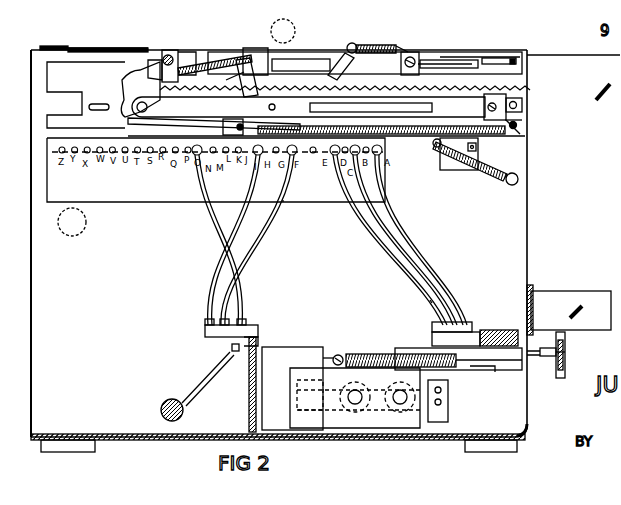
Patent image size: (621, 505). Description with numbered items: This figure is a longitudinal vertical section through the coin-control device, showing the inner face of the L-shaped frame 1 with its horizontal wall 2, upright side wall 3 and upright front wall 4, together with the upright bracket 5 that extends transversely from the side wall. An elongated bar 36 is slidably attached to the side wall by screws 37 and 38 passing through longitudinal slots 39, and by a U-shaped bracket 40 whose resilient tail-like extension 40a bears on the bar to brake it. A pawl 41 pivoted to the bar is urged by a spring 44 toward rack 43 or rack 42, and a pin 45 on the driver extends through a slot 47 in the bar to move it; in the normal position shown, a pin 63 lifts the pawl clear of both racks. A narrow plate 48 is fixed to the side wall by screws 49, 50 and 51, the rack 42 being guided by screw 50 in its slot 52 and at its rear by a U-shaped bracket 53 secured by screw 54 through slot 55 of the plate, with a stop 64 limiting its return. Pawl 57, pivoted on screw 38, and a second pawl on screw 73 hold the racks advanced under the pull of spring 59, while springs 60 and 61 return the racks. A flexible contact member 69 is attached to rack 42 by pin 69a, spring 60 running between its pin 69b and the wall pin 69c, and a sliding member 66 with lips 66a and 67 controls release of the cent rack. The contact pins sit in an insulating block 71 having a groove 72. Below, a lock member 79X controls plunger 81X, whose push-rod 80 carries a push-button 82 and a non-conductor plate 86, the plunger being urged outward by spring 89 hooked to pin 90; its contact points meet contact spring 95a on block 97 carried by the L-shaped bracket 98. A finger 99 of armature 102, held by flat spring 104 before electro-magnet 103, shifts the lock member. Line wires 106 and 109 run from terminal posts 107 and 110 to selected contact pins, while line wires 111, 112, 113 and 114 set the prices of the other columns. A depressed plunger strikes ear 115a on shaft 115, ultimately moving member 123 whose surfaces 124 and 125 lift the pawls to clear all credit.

The base or frame 1 is at (536, 228).
The horizontal wall 2 is at (138, 434).
The side wall 3 is at (512, 198).
The front wall 4 is at (530, 404).
The bracket 5 is at (230, 402).
The bar 36 is at (476, 56).
The screw 37 is at (412, 53).
The screw 38 is at (258, 72).
The longitudinal slots 39 is at (313, 62).
The U-shaped bracket 40 is at (420, 56).
The tail-like extension 40a is at (442, 52).
The pawl 41 is at (354, 43).
The rack 42 is at (308, 107).
The rack 43 is at (120, 104).
The spring 44 is at (366, 46).
The pin 45 is at (506, 62).
The slot 47 is at (500, 60).
The plate 48 is at (241, 76).
The screw 49 is at (523, 106).
The screw 50 is at (350, 109).
The screw 51 is at (147, 107).
The slot 52 is at (441, 152).
The U-shaped bracket 53 is at (500, 98).
The screw 54 is at (516, 128).
The slot 55 is at (470, 164).
The pawl 57 is at (233, 87).
The spring 59 is at (205, 56).
The spring 60 is at (423, 150).
The spring 61 is at (500, 186).
The pin 63 is at (338, 71).
The stop 64 is at (523, 113).
The member 66 is at (114, 60).
The lip 66a is at (86, 106).
The lip 67 is at (150, 76).
The contact member 69 is at (381, 160).
The pin 69a is at (283, 203).
The pin 69b is at (236, 126).
The pin 69c is at (517, 134).
The block 71 is at (115, 192).
The groove 72 is at (68, 165).
The screw 73 is at (170, 55).
The lock member 79X is at (266, 356).
The push-rod 80 is at (372, 350).
The plunger 81X is at (568, 352).
The push-button 82 is at (567, 372).
The non-conductor plate 86 is at (412, 348).
The spring 89 is at (495, 370).
The pin 90 is at (339, 355).
The contact spring 95a is at (455, 332).
The block 97 is at (533, 310).
The L-shaped bracket 98 is at (545, 316).
The finger 99 is at (262, 392).
The armature 102 is at (380, 402).
The electro-magnet 103 is at (394, 350).
The flat spring 104 is at (431, 412).
The line wire 106 is at (202, 240).
The terminal post 107 is at (252, 326).
The line wire 109 is at (392, 214).
The terminal post 110 is at (436, 300).
The line wire 111 is at (258, 221).
The line wire 112 is at (386, 255).
The line wire 113 is at (268, 238).
The line wire 114 is at (353, 234).
The shaft 115 is at (172, 398).
The ear 115a is at (224, 356).
The member 123 is at (92, 48).
The operative surface 124 is at (246, 48).
The operative surface 125 is at (150, 60).